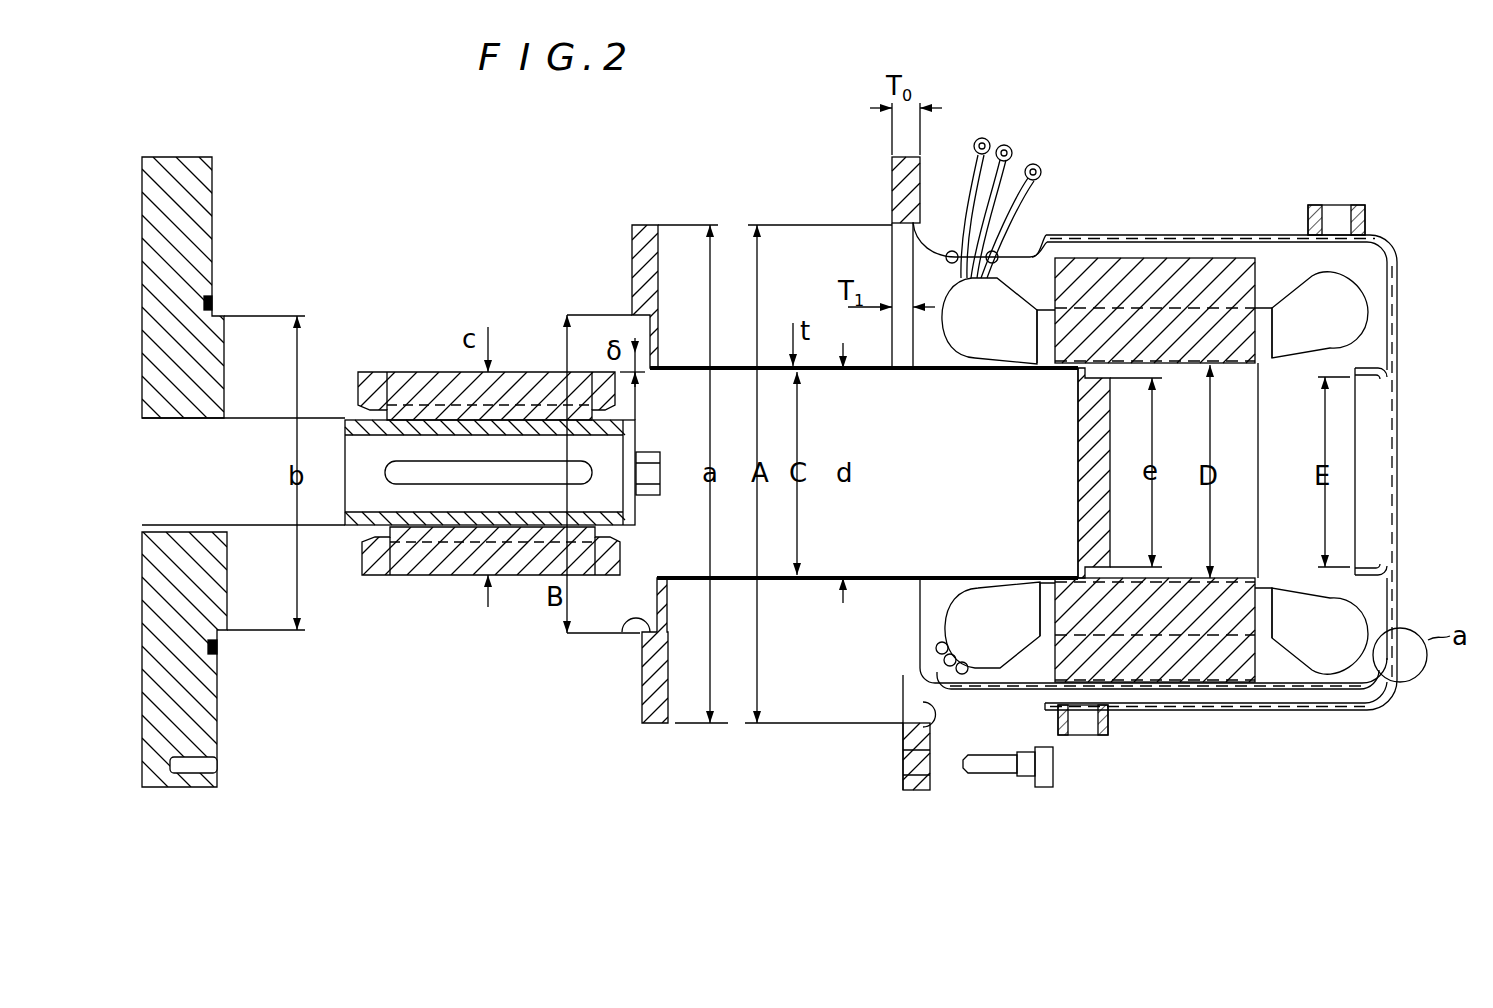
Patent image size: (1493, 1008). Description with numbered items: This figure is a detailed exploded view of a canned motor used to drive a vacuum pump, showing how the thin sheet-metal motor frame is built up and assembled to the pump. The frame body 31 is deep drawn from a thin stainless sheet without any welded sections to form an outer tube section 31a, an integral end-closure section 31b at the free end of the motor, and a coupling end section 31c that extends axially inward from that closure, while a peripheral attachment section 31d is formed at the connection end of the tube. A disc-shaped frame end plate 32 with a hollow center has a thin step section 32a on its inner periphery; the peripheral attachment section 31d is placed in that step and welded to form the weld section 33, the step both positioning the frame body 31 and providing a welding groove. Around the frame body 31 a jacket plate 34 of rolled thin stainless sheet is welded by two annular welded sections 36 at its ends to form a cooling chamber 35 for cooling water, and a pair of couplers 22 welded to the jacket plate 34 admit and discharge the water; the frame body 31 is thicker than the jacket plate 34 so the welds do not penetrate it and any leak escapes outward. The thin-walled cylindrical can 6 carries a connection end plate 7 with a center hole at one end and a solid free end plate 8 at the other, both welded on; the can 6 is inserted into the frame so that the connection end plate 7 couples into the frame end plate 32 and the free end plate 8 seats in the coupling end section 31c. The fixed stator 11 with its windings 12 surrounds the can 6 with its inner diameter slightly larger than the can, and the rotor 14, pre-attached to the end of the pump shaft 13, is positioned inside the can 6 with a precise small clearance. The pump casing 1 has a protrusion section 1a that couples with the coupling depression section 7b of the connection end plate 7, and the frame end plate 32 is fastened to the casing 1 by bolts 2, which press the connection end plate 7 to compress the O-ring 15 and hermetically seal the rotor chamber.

The pump casing 1 is at (214, 186).
The protrusion section 1a is at (226, 316).
The bolts 2 is at (1030, 775).
The can 6 is at (930, 370).
The connection end plate 7 is at (632, 256).
The coupling depression section 7b is at (636, 632).
The free end plate 8 is at (1078, 456).
The stator 11 is at (1180, 260).
The windings 12 is at (962, 628).
The pump shaft 13 is at (262, 515).
The rotor 14 is at (432, 577).
The O-ring 15 is at (218, 652).
The couplers 22 is at (1100, 740).
The frame body 31 is at (1263, 434).
The outer tube section 31a is at (1118, 252).
The end-closure section 31b is at (1398, 325).
The coupling end section 31c is at (1372, 378).
The peripheral attachment section 31d is at (923, 222).
The frame end plate 32 is at (892, 184).
The thin step section 32a is at (903, 694).
The weld section 33 is at (945, 720).
The jacket plate 34 is at (1275, 710).
The cooling chamber 35 is at (1193, 698).
The annular welded sections 36 is at (1015, 250).